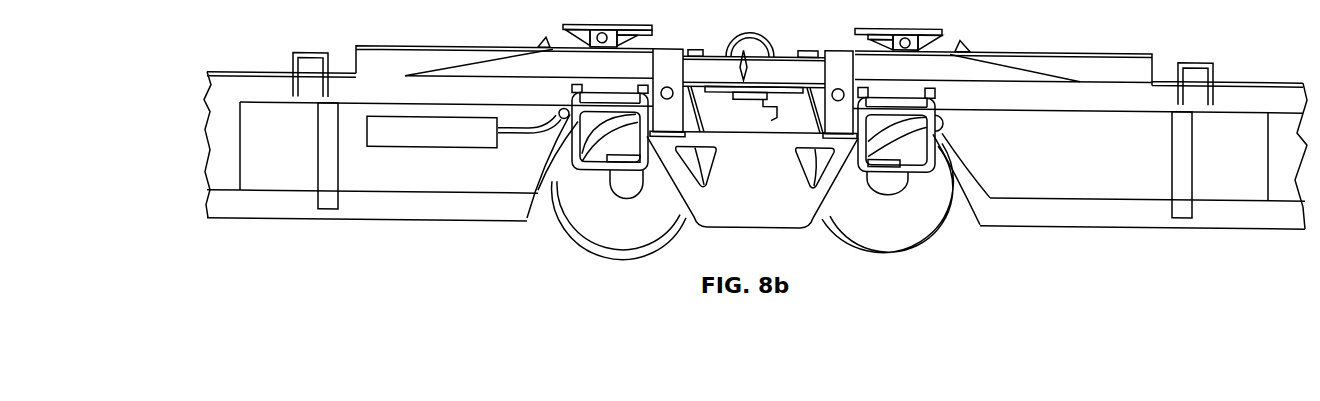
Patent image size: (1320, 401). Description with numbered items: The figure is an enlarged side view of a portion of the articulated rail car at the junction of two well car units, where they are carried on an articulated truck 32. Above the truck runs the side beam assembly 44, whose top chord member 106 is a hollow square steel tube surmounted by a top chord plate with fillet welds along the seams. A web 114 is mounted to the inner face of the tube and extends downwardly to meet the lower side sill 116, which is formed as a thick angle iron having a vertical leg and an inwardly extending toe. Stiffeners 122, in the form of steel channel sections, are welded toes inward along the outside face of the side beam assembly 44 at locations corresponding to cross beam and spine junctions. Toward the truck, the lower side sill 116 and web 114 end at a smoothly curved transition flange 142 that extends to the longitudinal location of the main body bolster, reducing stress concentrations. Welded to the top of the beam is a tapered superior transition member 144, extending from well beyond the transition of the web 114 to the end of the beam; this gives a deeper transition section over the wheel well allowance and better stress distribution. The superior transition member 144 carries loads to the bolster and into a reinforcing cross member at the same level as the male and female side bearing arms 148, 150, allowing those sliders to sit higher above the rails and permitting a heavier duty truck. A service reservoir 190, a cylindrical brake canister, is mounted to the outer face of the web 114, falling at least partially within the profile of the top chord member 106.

The articulated truck 32 is at (703, 226).
The right hand beam assembly 44 is at (257, 125).
The top chord member 106 is at (223, 88).
The web 114 is at (257, 161).
The lower side sill 116 is at (231, 220).
The stiffeners 122 is at (233, 72).
The transition flange 142 is at (537, 182).
The superior transition member 144 is at (515, 63).
The male side bearing arm 148 is at (717, 67).
The female side bearing arm 150 is at (788, 67).
The service reservoir 190 is at (428, 148).